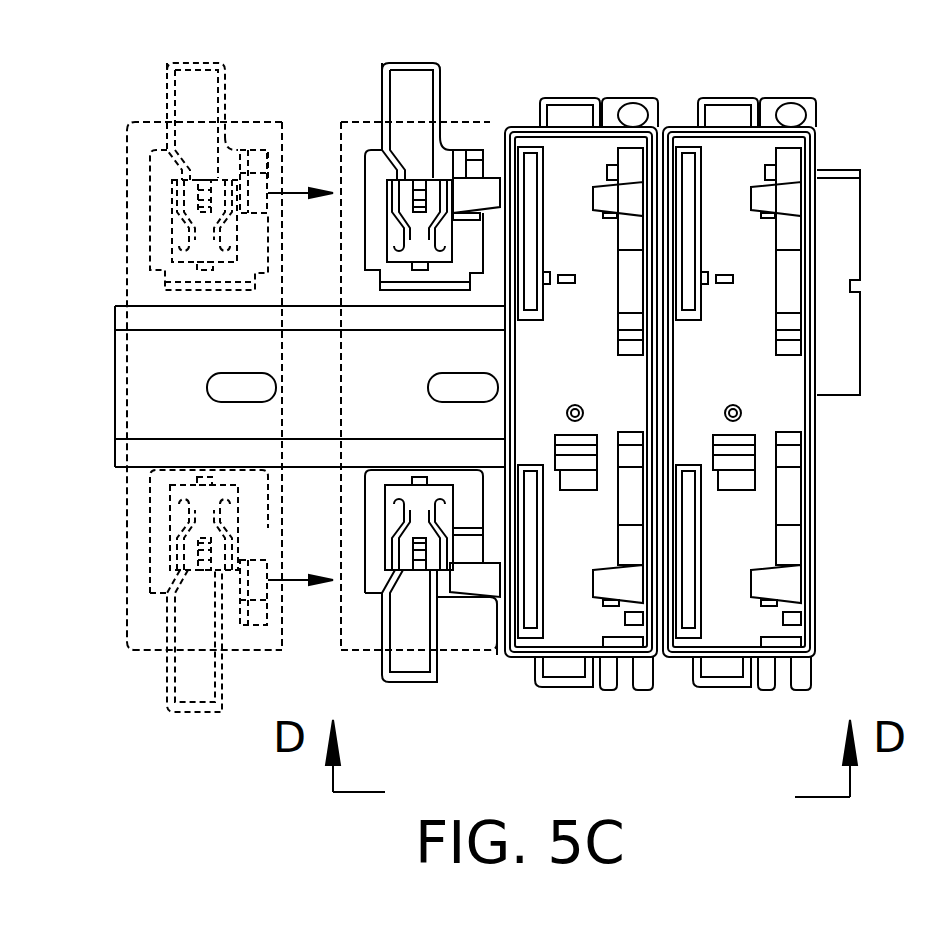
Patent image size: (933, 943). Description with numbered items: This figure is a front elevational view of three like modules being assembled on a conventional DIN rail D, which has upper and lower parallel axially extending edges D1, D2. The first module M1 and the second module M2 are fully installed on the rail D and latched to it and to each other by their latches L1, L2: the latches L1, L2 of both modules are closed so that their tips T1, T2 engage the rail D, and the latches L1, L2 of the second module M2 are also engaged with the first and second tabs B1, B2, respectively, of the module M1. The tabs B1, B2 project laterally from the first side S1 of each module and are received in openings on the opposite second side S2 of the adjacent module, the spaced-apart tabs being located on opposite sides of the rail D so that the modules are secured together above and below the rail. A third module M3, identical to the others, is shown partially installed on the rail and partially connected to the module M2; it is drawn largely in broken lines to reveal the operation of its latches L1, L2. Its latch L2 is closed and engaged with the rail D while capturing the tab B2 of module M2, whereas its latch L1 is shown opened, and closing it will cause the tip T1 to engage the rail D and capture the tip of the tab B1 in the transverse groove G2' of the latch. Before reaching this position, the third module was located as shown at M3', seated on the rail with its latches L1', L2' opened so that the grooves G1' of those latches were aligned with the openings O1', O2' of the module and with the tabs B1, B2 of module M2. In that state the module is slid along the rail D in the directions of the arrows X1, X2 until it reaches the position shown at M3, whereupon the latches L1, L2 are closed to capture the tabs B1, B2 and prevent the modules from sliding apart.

The DIN rail D is at (148, 375).
The upper edge of DIN rail D1 is at (147, 306).
The lower edge of DIN rail D2 is at (145, 468).
The first module M1 is at (745, 159).
The second module M2 is at (589, 155).
The third module M3 is at (439, 353).
The third module in pre-installed position M3' is at (252, 319).
The first latch L1 is at (541, 96).
The second latch L2 is at (554, 652).
The first latch in opened position L1' is at (173, 96).
The second latch in opened position L2' is at (171, 670).
The first tab B1 is at (483, 200).
The second tab B2 is at (475, 585).
The first tip T1 is at (435, 292).
The second tip T2 is at (443, 470).
The first side S1 is at (660, 312).
The second side S2 is at (655, 318).
The groove of opened latch G1' is at (286, 387).
The transverse groove G2' is at (312, 383).
The first opening O1' is at (327, 131).
The second opening O2' is at (317, 641).
The sliding direction arrow X1 is at (288, 197).
The sliding direction arrow X2 is at (288, 580).